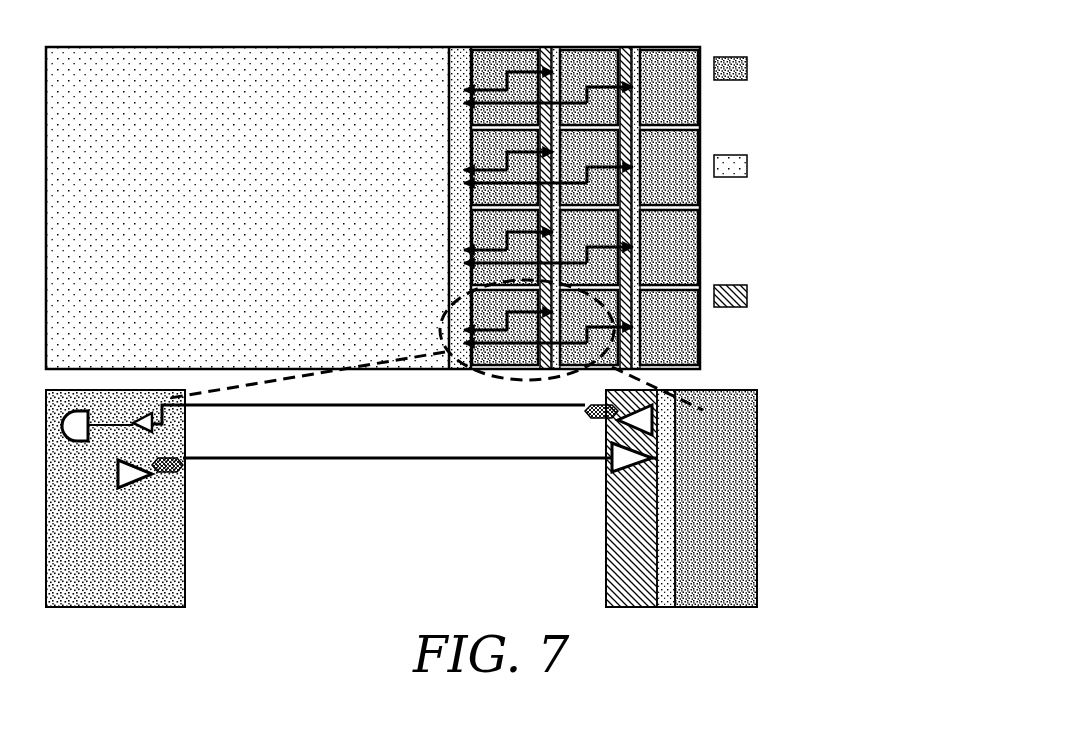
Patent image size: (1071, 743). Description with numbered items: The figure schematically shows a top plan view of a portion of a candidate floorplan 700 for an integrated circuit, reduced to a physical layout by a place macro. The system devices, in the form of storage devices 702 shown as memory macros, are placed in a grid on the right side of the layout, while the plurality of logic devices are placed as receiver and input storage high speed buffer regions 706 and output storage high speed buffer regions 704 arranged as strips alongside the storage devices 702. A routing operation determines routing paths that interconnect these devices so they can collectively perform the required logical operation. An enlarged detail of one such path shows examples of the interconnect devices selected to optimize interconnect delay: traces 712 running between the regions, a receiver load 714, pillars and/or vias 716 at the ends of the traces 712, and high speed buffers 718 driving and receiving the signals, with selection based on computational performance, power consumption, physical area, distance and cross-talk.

The integrated circuit / memory device layout 700 is at (393, 38).
The storage device 702 is at (800, 80).
The output storage high speed buffer region 704 is at (800, 165).
The receiver and input storage high speed buffer region 706 is at (800, 285).
The trace 712 is at (451, 411).
The receiver load 714 is at (161, 431).
The pillar and/or via 716 is at (580, 424).
The high speed buffer 718 is at (613, 431).